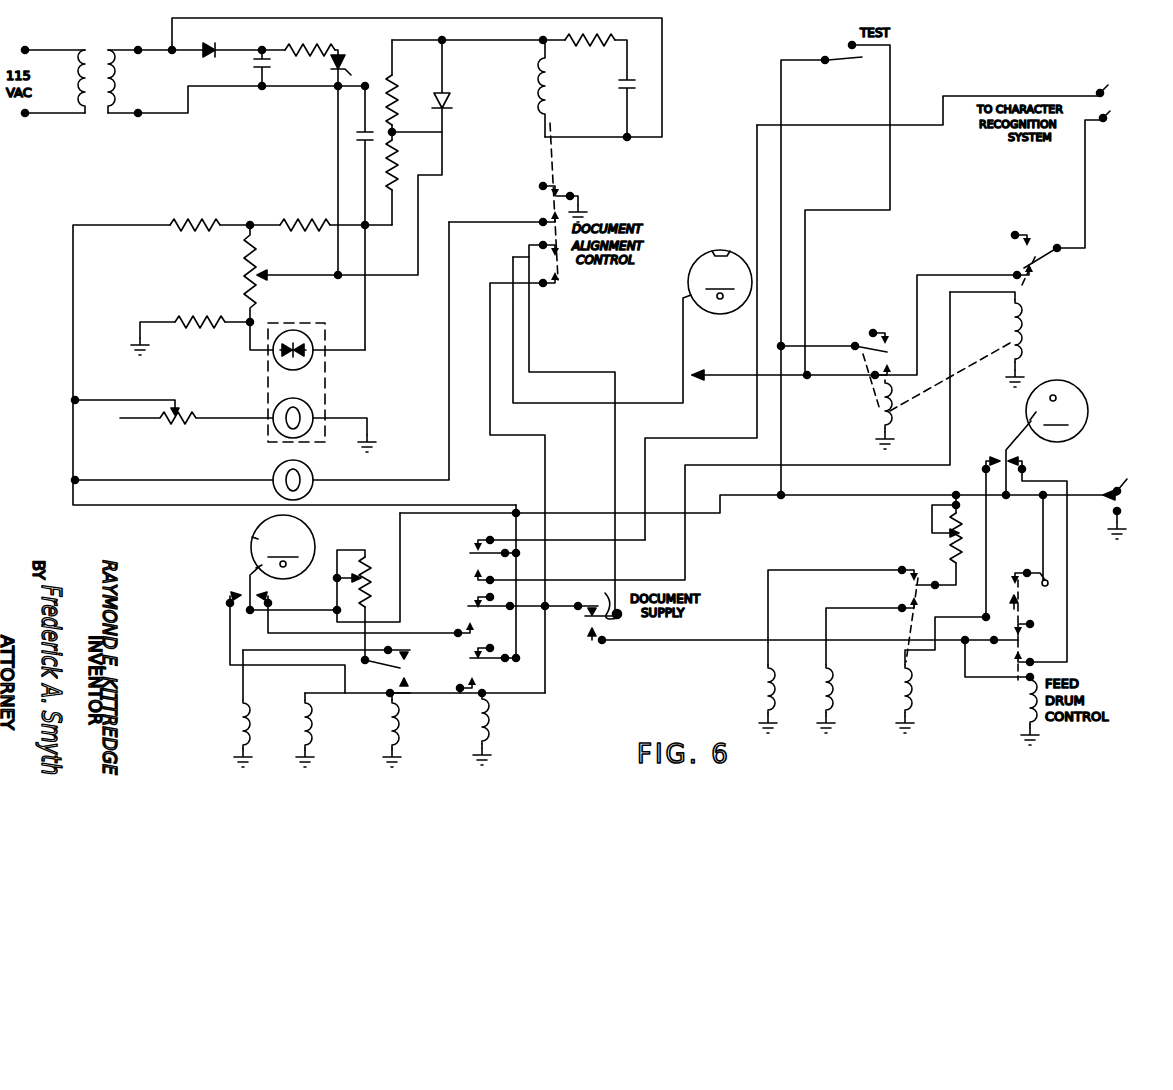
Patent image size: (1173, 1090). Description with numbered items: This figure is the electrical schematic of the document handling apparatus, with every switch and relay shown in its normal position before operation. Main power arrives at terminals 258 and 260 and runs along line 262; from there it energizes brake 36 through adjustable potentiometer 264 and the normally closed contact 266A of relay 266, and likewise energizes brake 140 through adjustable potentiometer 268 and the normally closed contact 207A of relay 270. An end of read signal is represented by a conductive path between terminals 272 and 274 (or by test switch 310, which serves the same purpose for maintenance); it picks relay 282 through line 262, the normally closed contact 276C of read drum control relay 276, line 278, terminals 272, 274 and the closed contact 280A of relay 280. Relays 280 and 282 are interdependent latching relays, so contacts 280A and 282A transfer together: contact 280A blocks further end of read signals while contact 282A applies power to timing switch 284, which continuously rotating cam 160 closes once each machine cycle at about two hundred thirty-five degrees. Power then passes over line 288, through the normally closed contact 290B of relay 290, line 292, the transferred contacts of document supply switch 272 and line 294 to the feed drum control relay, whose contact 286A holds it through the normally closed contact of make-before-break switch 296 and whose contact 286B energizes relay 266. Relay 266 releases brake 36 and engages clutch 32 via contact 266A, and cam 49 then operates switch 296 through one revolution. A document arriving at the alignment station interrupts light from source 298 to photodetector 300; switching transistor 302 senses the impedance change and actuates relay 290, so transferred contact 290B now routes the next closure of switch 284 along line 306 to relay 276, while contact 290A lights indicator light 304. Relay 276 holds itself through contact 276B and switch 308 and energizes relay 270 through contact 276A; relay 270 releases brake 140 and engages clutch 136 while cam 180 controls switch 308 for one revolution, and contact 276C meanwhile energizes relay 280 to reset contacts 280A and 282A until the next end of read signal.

The switching transistor 302 is at (446, 103).
The relay 290 is at (539, 108).
The contact of relay 290 290A is at (518, 204).
The normally closed contact of relay 290 290B is at (542, 275).
The line 292 is at (562, 370).
The line 288 is at (606, 406).
The line 306 is at (528, 438).
The timing switch 284 is at (783, 370).
The line 278 is at (758, 405).
The cam 160 is at (720, 303).
The cam 49 is at (1057, 411).
The switch 296 is at (1022, 434).
The relay 280 is at (774, 436).
The contact of relay 280 280A is at (1044, 259).
The relay 282 is at (925, 362).
The contact of relay 282 282A is at (835, 370).
The document supply switch 272 is at (838, 357).
The terminal 274 is at (1088, 179).
The test switch 310 is at (821, 276).
The photodetector 300 is at (320, 358).
The light source 298 is at (322, 416).
The indicator light 304 is at (312, 478).
The line 262 is at (830, 494).
The terminal 258 is at (1122, 479).
The terminal 260 is at (1131, 521).
The adjustable potentiometer 264 is at (957, 540).
The normally closed contact of relay 266 266A is at (902, 590).
The relay 266 is at (911, 683).
The contact of feed drum control relay 286B is at (1031, 552).
The contact of feed drum control relay 286A is at (1034, 630).
The brake 36 is at (762, 689).
The clutch 32 is at (822, 685).
The line 294 is at (726, 642).
The cam 180 is at (283, 547).
The switch 308 is at (284, 590).
The adjustable potentiometer 268 is at (364, 608).
The normally closed contact of relay 270 207A is at (326, 672).
The normally closed contact of relay 276 276C is at (536, 560).
The contact of relay 276 276B is at (425, 615).
The contact of relay 276 276A is at (489, 669).
The read drum control relay 276 is at (513, 728).
The relay 270 is at (409, 730).
The brake 140 is at (236, 732).
The clutch 136 is at (304, 732).